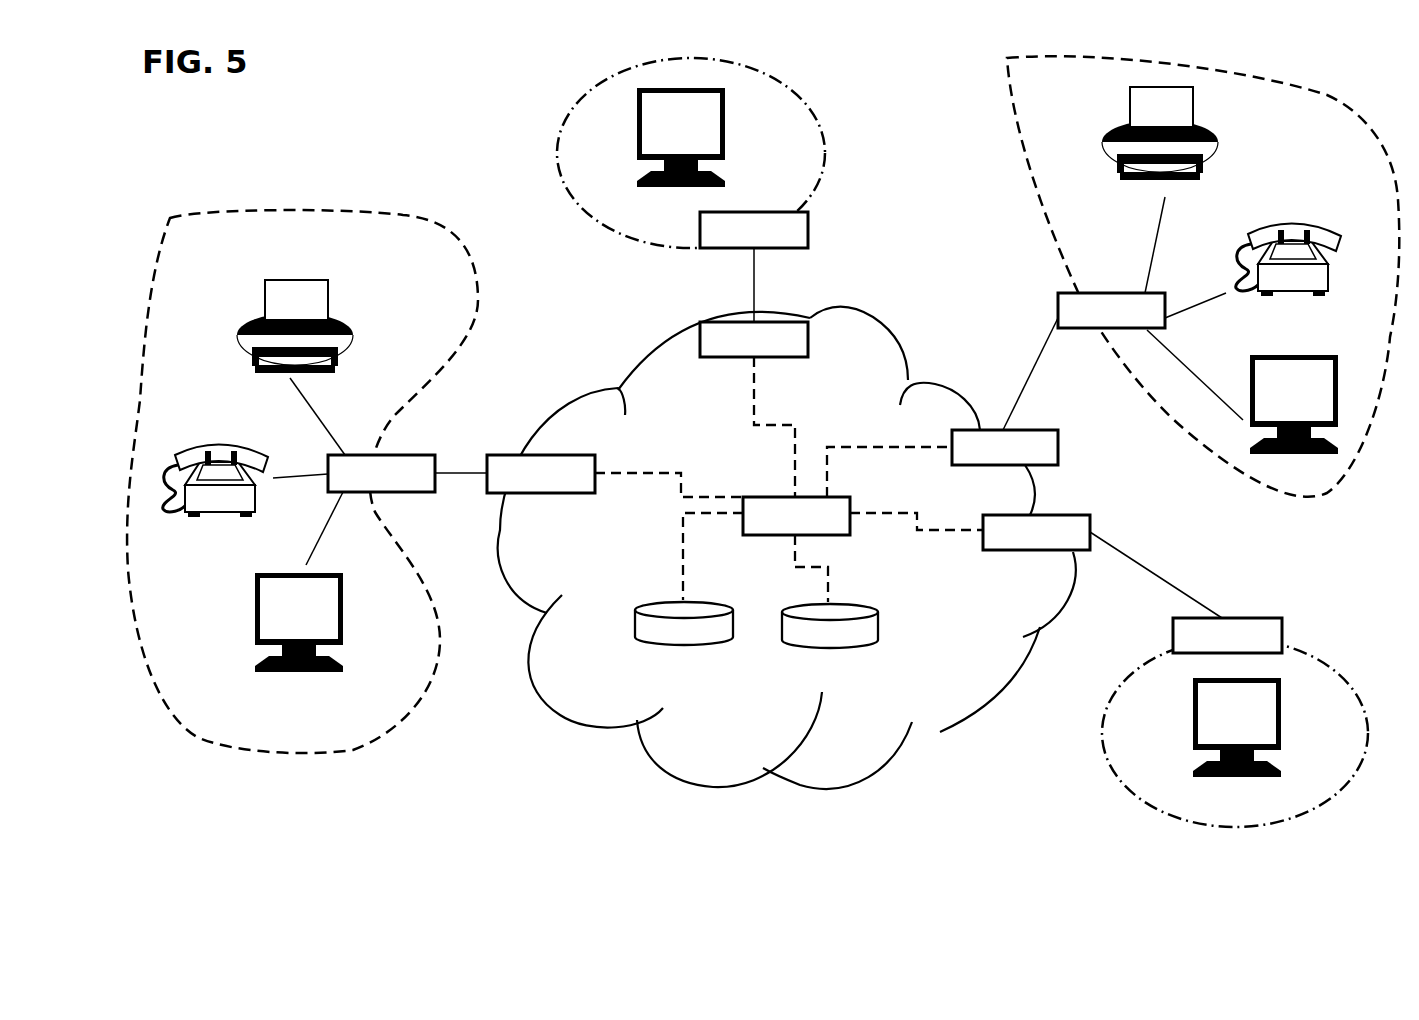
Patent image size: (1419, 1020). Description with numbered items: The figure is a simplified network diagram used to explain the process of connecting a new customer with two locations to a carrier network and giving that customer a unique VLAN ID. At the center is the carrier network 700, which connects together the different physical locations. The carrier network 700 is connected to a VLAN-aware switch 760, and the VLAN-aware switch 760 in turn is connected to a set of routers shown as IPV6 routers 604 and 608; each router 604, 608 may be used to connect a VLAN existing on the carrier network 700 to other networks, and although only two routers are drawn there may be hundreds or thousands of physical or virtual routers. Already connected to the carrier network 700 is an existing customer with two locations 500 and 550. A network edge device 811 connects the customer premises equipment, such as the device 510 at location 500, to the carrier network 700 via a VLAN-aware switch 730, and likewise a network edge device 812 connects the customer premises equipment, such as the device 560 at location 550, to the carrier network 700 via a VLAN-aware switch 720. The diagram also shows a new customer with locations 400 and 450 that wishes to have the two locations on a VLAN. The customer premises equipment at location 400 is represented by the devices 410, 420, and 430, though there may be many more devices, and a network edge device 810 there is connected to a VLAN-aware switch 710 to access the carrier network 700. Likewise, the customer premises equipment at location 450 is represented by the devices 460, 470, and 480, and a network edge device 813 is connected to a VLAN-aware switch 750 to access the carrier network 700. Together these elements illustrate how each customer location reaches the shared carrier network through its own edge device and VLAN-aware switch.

The location 400 is at (333, 203).
The device 410 is at (292, 672).
The device 420 is at (220, 440).
The device 430 is at (242, 318).
The location 450 is at (1325, 98).
The device 460 is at (1295, 355).
The device 470 is at (1285, 220).
The device 480 is at (1112, 125).
The location 500 is at (580, 98).
The device 510 is at (718, 175).
The location 550 is at (1360, 690).
The device 560 is at (1198, 762).
The IPV6 router 604 is at (645, 645).
The IPV6 router 608 is at (868, 645).
The carrier network 700 is at (587, 388).
The VLAN-aware switch 710 is at (516, 487).
The VLAN-aware switch 720 is at (1011, 546).
The VLAN-aware switch 730 is at (729, 353).
The VLAN-aware switch 750 is at (980, 461).
The VLAN-aware switch 760 is at (771, 529).
The network edge device 810 is at (356, 487).
The network edge device 811 is at (729, 244).
The network edge device 812 is at (1202, 649).
The network edge device 813 is at (1086, 324).